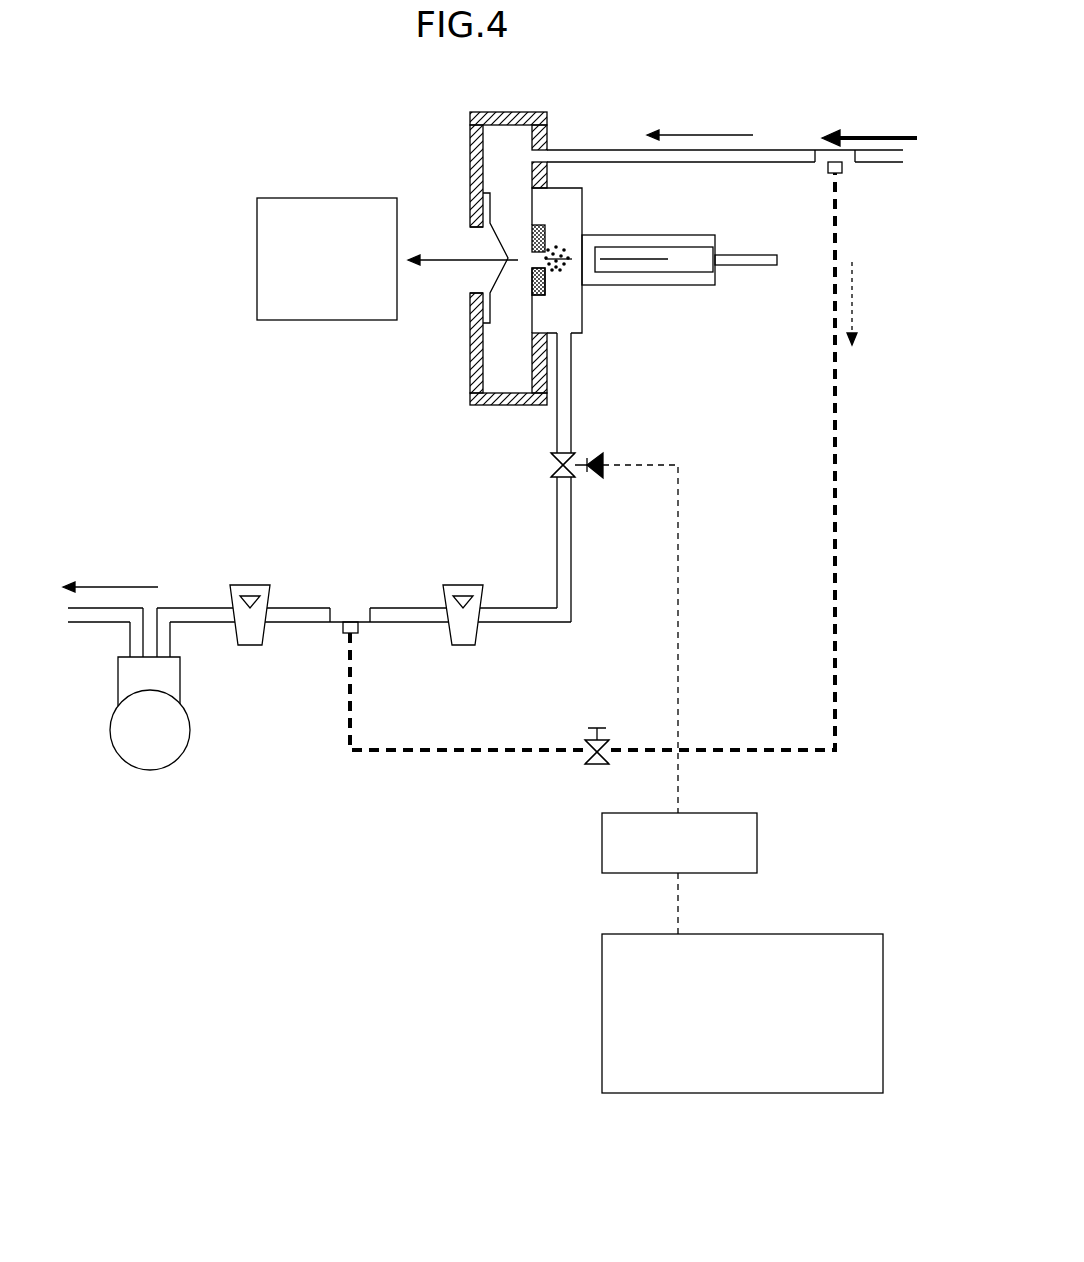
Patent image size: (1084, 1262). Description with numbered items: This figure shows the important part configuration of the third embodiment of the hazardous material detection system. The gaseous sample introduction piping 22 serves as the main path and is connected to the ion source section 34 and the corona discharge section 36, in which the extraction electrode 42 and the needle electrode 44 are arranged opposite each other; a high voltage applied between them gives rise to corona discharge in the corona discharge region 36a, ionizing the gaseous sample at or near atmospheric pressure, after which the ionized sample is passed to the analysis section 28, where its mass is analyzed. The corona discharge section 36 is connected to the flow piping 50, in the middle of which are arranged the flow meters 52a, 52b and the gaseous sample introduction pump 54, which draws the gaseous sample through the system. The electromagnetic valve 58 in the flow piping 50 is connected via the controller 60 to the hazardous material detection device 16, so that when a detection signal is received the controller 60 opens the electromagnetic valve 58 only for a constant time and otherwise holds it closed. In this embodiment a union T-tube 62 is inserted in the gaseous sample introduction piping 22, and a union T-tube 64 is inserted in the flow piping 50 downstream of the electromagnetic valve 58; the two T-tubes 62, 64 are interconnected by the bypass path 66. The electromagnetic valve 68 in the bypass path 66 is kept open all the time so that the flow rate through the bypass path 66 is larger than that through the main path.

The hazardous material detection device 16 is at (602, 1010).
The gaseous sample introduction piping 22 is at (780, 150).
The analysis section 28 is at (327, 198).
The ion source section 34 is at (697, 220).
The corona discharge section 36 is at (592, 193).
The corona discharge region 36a is at (560, 250).
The extraction electrode 42 is at (548, 272).
The needle electrode 44 is at (668, 259).
The flow piping 50 is at (571, 383).
The flow meter 52a is at (250, 585).
The flow meter 52b is at (465, 585).
The gaseous sample introduction pump 54 is at (190, 728).
The electromagnetic valve 58 is at (571, 453).
The controller 60 is at (757, 841).
The union T-tube 62 is at (846, 166).
The union T-tube 64 is at (352, 608).
The bypass path 66 is at (838, 598).
The electromagnetic valve 68 is at (597, 728).